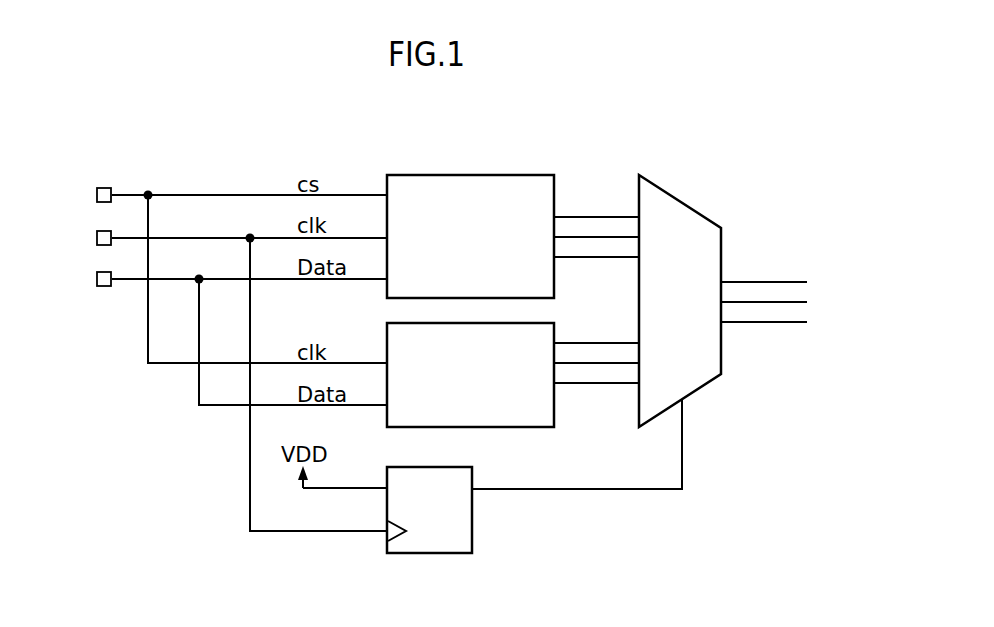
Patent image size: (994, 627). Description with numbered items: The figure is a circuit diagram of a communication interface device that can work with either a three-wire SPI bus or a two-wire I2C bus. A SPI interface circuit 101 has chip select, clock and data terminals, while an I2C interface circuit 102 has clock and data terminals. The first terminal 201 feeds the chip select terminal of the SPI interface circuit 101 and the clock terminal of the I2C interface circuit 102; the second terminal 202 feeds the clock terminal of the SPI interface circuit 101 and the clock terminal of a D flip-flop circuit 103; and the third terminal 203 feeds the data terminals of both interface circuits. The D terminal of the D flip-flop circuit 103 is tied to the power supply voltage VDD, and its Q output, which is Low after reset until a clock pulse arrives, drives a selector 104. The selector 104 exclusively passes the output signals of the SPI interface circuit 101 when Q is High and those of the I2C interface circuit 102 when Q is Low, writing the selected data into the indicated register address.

The SPI interface circuit 101 is at (548, 176).
The I2C interface circuit 102 is at (548, 324).
The D flip-flop circuit 103 is at (473, 477).
The selector 104 is at (697, 212).
The first terminal 201 is at (97, 189).
The second terminal 202 is at (97, 232).
The third terminal 203 is at (97, 273).